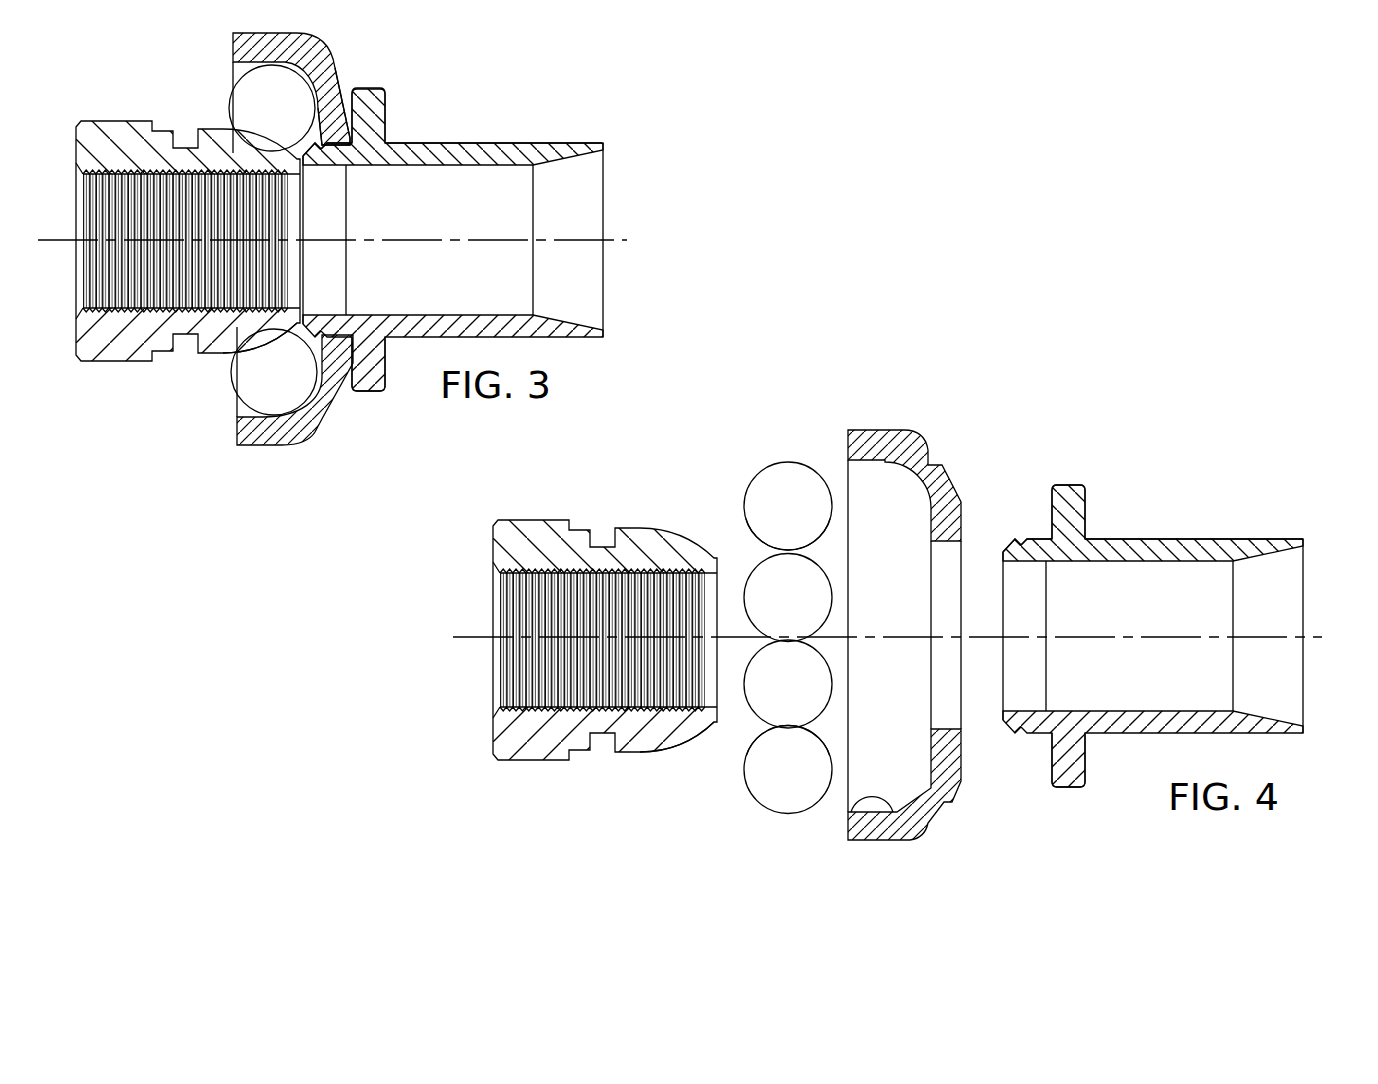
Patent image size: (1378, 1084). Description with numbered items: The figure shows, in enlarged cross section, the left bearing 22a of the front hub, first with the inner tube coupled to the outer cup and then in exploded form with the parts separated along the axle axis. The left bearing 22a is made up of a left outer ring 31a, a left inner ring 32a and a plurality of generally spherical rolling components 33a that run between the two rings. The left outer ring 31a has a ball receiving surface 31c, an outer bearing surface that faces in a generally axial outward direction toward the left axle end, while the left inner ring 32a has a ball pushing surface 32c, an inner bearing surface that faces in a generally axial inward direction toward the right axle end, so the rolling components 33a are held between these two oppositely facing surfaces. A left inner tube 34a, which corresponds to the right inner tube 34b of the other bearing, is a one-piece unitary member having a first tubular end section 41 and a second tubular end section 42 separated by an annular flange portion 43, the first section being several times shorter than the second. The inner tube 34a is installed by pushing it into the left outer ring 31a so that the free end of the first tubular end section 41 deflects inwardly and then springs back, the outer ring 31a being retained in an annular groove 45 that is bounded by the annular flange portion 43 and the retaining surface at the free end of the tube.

In FIG. 3, the left bearing 22a is at (358, 226).
In FIG. 4, the left bearing 22a is at (908, 623).
In FIG. 3, the left outer ring 31a is at (326, 223).
In FIG. 4, the left outer ring 31a is at (882, 635).
In FIG. 3, the ball receiving surface 31c is at (338, 78).
In FIG. 4, the ball receiving surface 31c is at (850, 800).
In FIG. 3, the left inner ring 32a is at (165, 237).
In FIG. 4, the left inner ring 32a is at (584, 637).
In FIG. 3, the ball pushing surface 32c is at (258, 346).
In FIG. 4, the ball pushing surface 32c is at (690, 735).
In FIG. 3, the rolling components 33a is at (228, 90).
In FIG. 4, the rolling components 33a is at (804, 461).
In FIG. 3, the left inner tube 34a is at (495, 250).
In FIG. 4, the left inner tube 34a is at (1175, 641).
In FIG. 3, the right inner tube 34b is at (495, 250).
In FIG. 4, the right inner tube 34b is at (1175, 641).
In FIG. 3, the first tubular end section 41 is at (352, 131).
In FIG. 4, the first tubular end section 41 is at (1036, 546).
In FIG. 3, the second tubular end section 42 is at (483, 143).
In FIG. 4, the second tubular end section 42 is at (1157, 539).
In FIG. 3, the annular flange portion 43 is at (372, 88).
In FIG. 4, the annular flange portion 43 is at (1076, 485).
In FIG. 3, the annular groove 45 is at (339, 346).
In FIG. 4, the annular groove 45 is at (1034, 753).